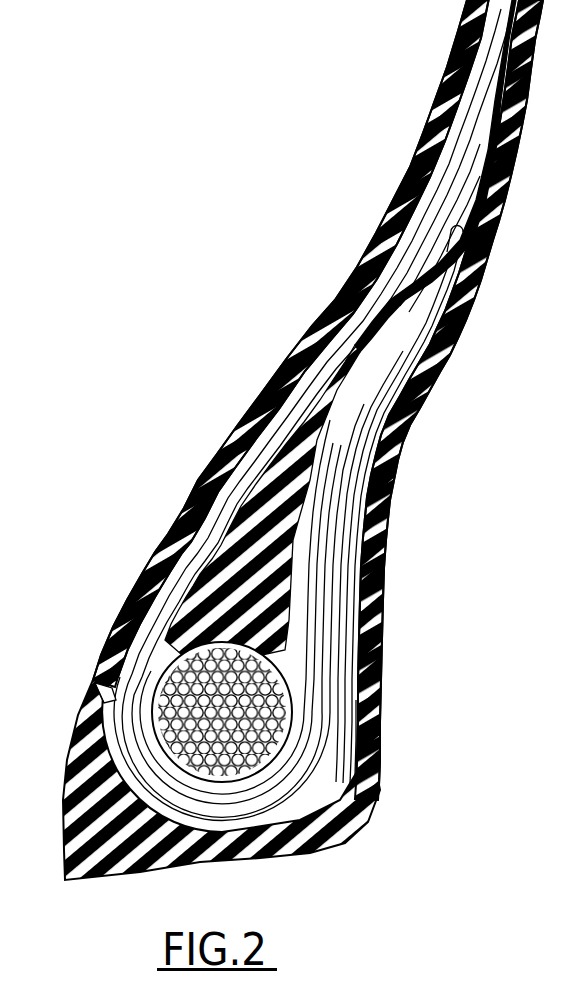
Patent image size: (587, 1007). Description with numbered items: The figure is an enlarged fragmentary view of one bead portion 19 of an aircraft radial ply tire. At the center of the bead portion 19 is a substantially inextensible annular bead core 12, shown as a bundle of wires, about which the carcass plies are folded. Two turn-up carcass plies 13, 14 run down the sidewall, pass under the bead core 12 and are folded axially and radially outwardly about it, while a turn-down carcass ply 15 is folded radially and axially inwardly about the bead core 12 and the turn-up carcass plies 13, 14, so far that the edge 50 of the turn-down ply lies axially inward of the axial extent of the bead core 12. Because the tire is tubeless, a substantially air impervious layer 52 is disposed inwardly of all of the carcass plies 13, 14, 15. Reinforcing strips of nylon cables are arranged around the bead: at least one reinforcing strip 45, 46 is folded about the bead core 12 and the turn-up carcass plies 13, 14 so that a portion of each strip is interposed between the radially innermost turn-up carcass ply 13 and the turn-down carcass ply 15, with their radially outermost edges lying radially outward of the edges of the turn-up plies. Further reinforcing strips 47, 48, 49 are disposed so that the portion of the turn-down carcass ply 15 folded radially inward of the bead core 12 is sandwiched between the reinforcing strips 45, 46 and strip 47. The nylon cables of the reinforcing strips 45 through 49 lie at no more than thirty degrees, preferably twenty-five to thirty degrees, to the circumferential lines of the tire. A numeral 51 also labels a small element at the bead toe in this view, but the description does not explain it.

The bead core 12 is at (190, 657).
The turn-up carcass ply 13 is at (325, 374).
The turn-up carcass ply 14 is at (315, 413).
The turn-down carcass ply 15 is at (395, 360).
The bead portion 19 is at (136, 390).
The reinforcing strip 45 is at (230, 470).
The reinforcing strip 46 is at (363, 400).
The reinforcing strip 47 is at (350, 537).
The reinforcing strip 48 is at (355, 567).
The reinforcing strip 49 is at (358, 635).
The edge of turn-down ply 50 is at (100, 703).
The bead toe strip end 51 is at (214, 714).
The air impervious layer 52 is at (401, 199).